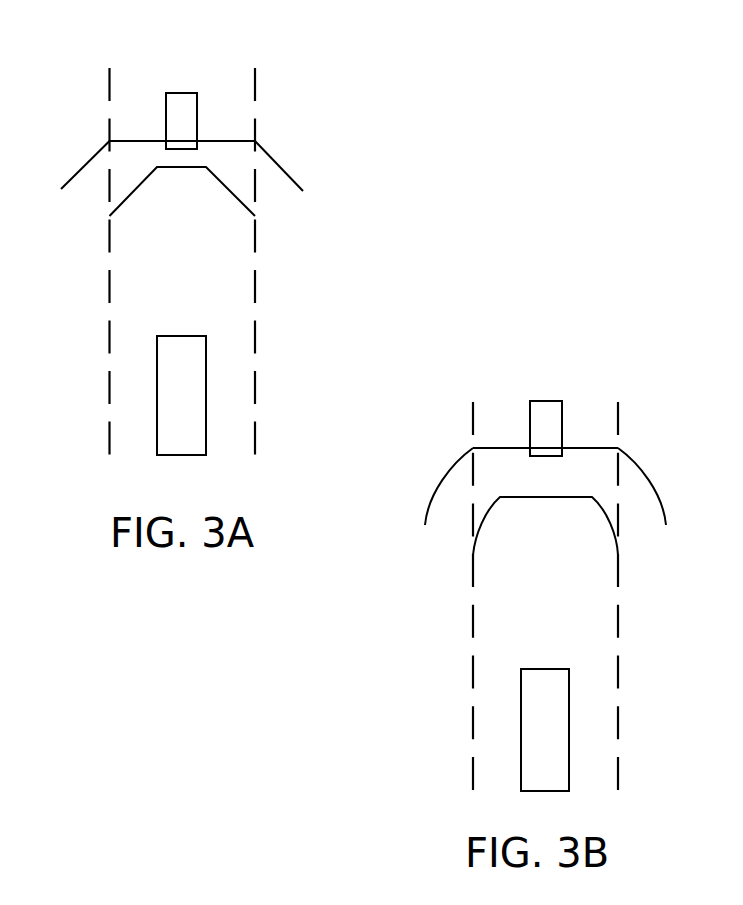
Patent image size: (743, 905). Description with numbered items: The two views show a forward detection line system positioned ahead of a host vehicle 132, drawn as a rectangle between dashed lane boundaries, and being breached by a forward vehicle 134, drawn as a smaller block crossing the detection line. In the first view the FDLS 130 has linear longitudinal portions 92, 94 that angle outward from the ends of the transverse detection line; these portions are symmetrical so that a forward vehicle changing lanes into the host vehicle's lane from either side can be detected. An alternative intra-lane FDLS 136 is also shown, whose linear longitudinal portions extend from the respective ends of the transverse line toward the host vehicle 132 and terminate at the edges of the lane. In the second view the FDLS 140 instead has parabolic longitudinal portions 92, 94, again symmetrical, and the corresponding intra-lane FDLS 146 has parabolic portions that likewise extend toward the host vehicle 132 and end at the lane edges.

In FIG. 3A, the longitudinal portion 92 is at (86, 165).
In FIG. 3B, the longitudinal portion 92 is at (450, 473).
In FIG. 3A, the longitudinal portion 94 is at (290, 176).
In FIG. 3B, the longitudinal portion 94 is at (641, 472).
In FIG. 3A, the FDLS 130 is at (268, 139).
In FIG. 3A, the host vehicle 132 is at (177, 336).
In FIG. 3B, the host vehicle 132 is at (537, 669).
In FIG. 3A, the forward vehicle 134 is at (180, 93).
In FIG. 3B, the forward vehicle 134 is at (553, 401).
In FIG. 3A, the intra-lane FDLS 136 is at (201, 180).
In FIG. 3B, the FDLS 140 is at (651, 441).
In FIG. 3B, the intra-lane FDLS 146 is at (548, 492).